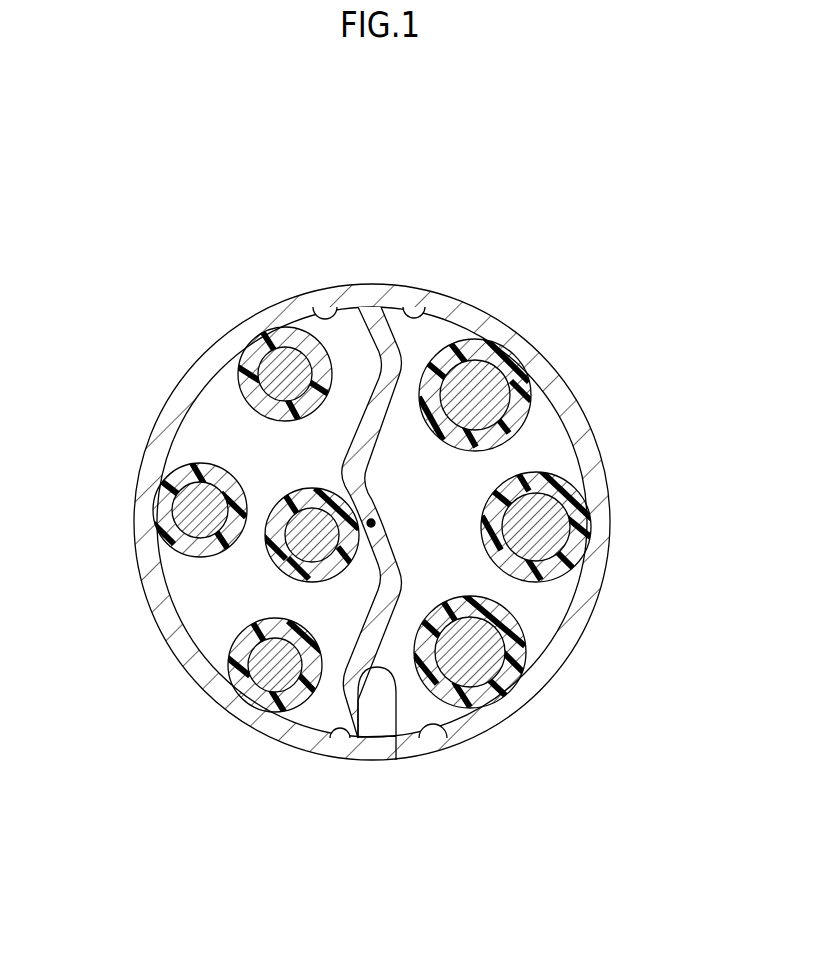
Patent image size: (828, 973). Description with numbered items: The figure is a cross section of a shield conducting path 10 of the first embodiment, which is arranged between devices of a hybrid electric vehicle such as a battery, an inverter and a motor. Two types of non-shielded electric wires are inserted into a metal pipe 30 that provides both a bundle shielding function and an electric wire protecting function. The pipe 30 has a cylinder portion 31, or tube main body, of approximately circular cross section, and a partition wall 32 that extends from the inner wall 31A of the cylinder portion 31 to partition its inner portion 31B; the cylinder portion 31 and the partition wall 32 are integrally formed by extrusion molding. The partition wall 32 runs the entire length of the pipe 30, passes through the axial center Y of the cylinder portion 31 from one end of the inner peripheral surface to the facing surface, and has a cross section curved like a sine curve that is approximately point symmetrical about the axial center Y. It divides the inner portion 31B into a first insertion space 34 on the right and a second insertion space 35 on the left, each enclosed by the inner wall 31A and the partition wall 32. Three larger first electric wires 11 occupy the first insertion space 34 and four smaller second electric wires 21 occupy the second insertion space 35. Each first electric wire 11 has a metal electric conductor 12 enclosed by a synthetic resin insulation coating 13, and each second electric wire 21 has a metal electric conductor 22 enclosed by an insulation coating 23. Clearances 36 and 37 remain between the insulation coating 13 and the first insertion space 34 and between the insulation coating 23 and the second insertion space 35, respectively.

The shield conducting path 10 is at (429, 171).
The first electric wire 11 is at (527, 378).
The electric conductor 12 is at (508, 397).
The insulation coating 13 is at (455, 345).
The second electric wire 21 is at (240, 385).
The electric conductor 22 is at (272, 348).
The insulation coating 23 is at (237, 386).
The pipe 30 is at (415, 758).
The cylinder portion 31 is at (612, 525).
The inner wall 31A is at (314, 304).
The inner portion 31B is at (200, 428).
The partition wall 32 is at (392, 742).
The first insertion space 34 is at (443, 718).
The second insertion space 35 is at (334, 742).
The clearance 36 is at (552, 600).
The clearance 37 is at (182, 568).
The axial center Y is at (371, 523).